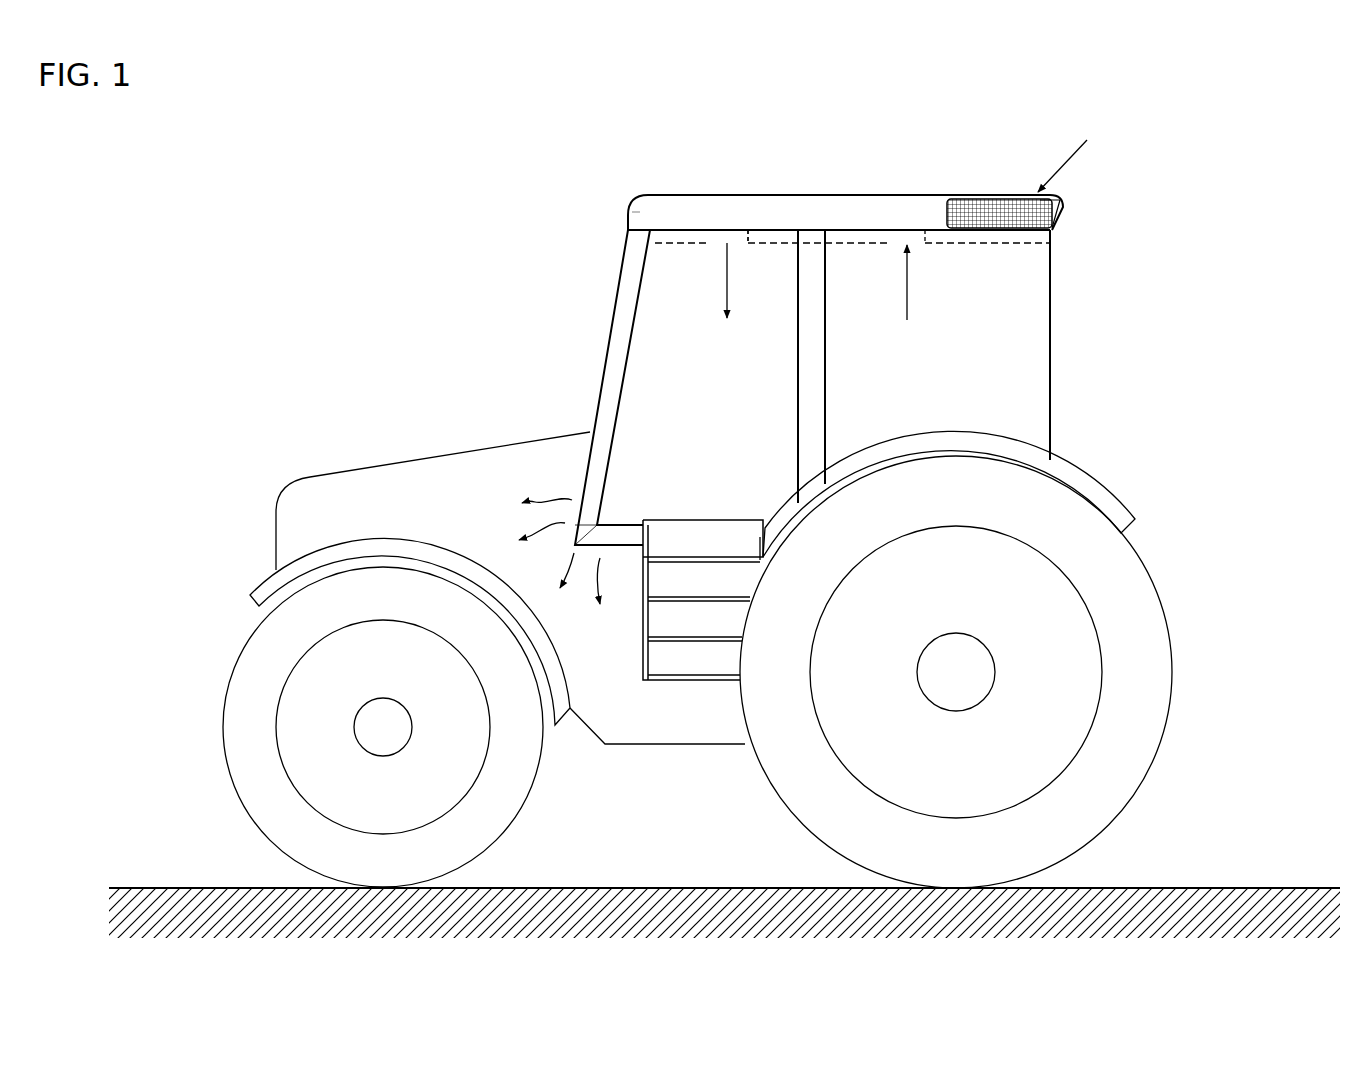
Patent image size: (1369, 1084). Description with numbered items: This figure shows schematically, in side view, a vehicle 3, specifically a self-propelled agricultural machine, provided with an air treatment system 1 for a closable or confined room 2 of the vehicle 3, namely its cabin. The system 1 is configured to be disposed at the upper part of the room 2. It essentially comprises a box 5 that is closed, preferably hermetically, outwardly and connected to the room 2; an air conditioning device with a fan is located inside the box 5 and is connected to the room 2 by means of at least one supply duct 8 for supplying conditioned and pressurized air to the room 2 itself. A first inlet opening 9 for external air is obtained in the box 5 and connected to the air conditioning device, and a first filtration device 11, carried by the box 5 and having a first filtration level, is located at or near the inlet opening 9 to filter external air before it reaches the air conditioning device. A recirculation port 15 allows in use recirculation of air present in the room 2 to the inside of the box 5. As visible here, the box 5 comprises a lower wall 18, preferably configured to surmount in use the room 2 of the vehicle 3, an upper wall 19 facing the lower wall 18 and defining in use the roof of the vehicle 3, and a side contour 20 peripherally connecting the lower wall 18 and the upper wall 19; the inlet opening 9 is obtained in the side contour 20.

The air treatment system 1 is at (531, 143).
The closable or confined room 2 is at (637, 420).
The vehicle 3 is at (281, 408).
The box 5 is at (777, 205).
The supply duct 8 is at (714, 235).
The first inlet opening 9 is at (1020, 198).
The first filtration device 11 is at (963, 196).
The recirculation port 15 is at (900, 237).
The lower wall 18 is at (767, 232).
The upper wall 19 is at (714, 195).
The side contour 20 is at (653, 215).